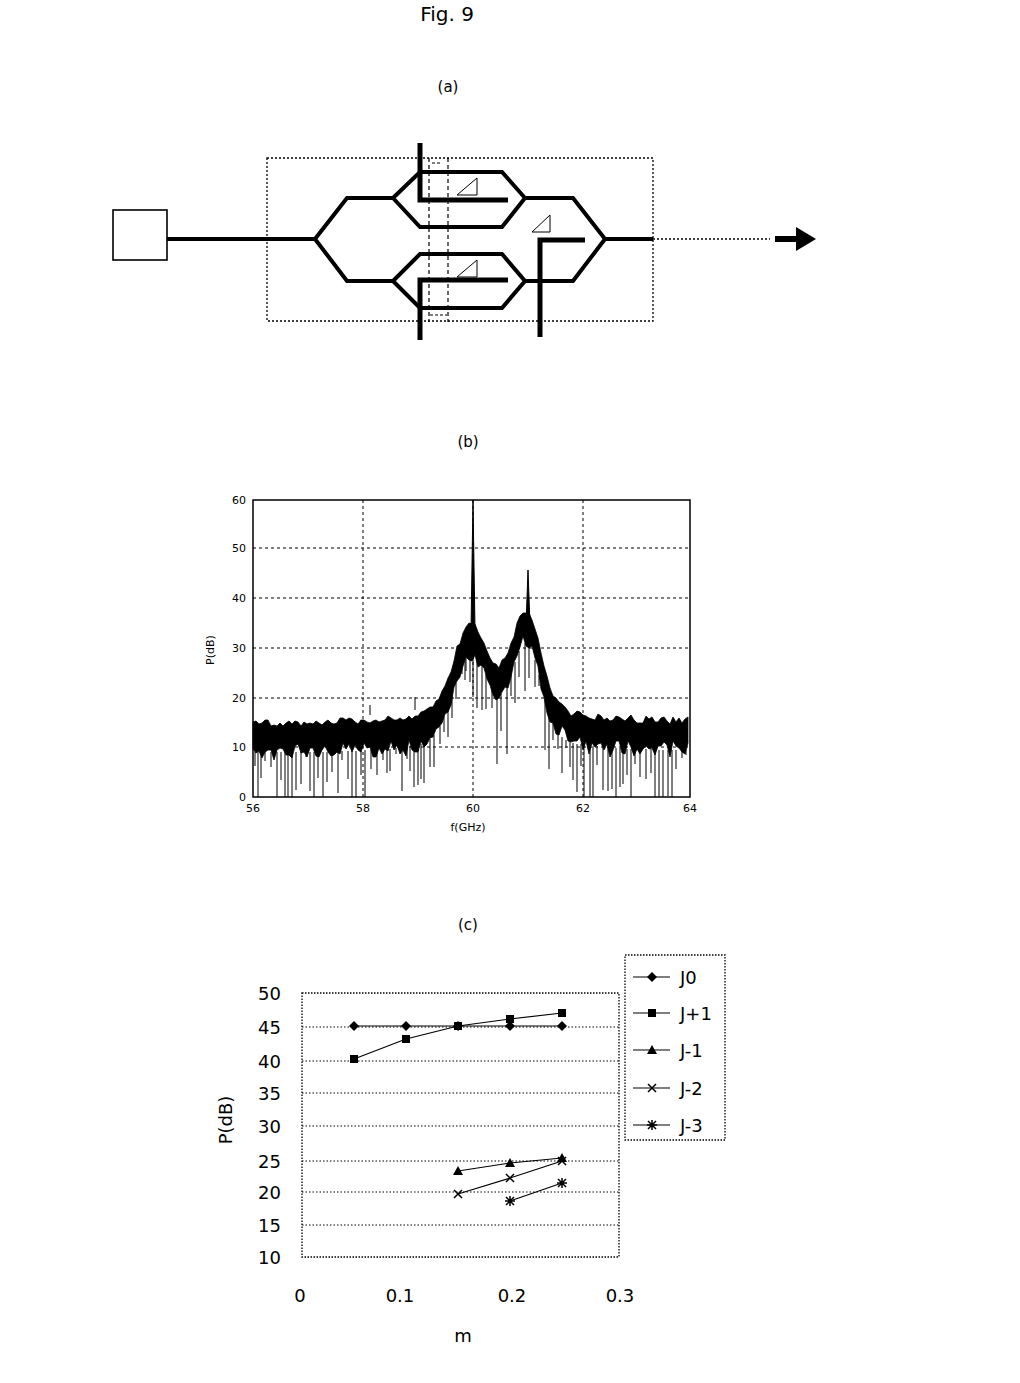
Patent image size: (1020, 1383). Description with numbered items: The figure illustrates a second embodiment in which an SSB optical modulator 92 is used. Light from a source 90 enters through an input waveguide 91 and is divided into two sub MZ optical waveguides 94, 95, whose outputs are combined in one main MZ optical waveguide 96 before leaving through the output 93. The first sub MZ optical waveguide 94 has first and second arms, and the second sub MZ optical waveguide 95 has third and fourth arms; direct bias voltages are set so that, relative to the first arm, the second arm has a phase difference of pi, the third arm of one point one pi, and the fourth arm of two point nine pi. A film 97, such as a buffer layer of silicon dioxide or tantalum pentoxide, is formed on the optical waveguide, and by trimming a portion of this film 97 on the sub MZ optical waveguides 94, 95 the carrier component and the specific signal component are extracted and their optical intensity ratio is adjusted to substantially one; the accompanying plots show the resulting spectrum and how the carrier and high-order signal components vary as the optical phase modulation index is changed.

The laser diode (LD) light source 90 is at (140, 262).
The input optical waveguide / fiber 91 is at (207, 242).
The SSB optical modulator 92 is at (592, 158).
The output optical fiber 93 is at (703, 241).
The sub MZ optical waveguide 94 is at (483, 170).
The sub MZ optical waveguide 95 is at (477, 309).
The main MZ optical waveguide 96 is at (580, 275).
The film 97 is at (437, 318).